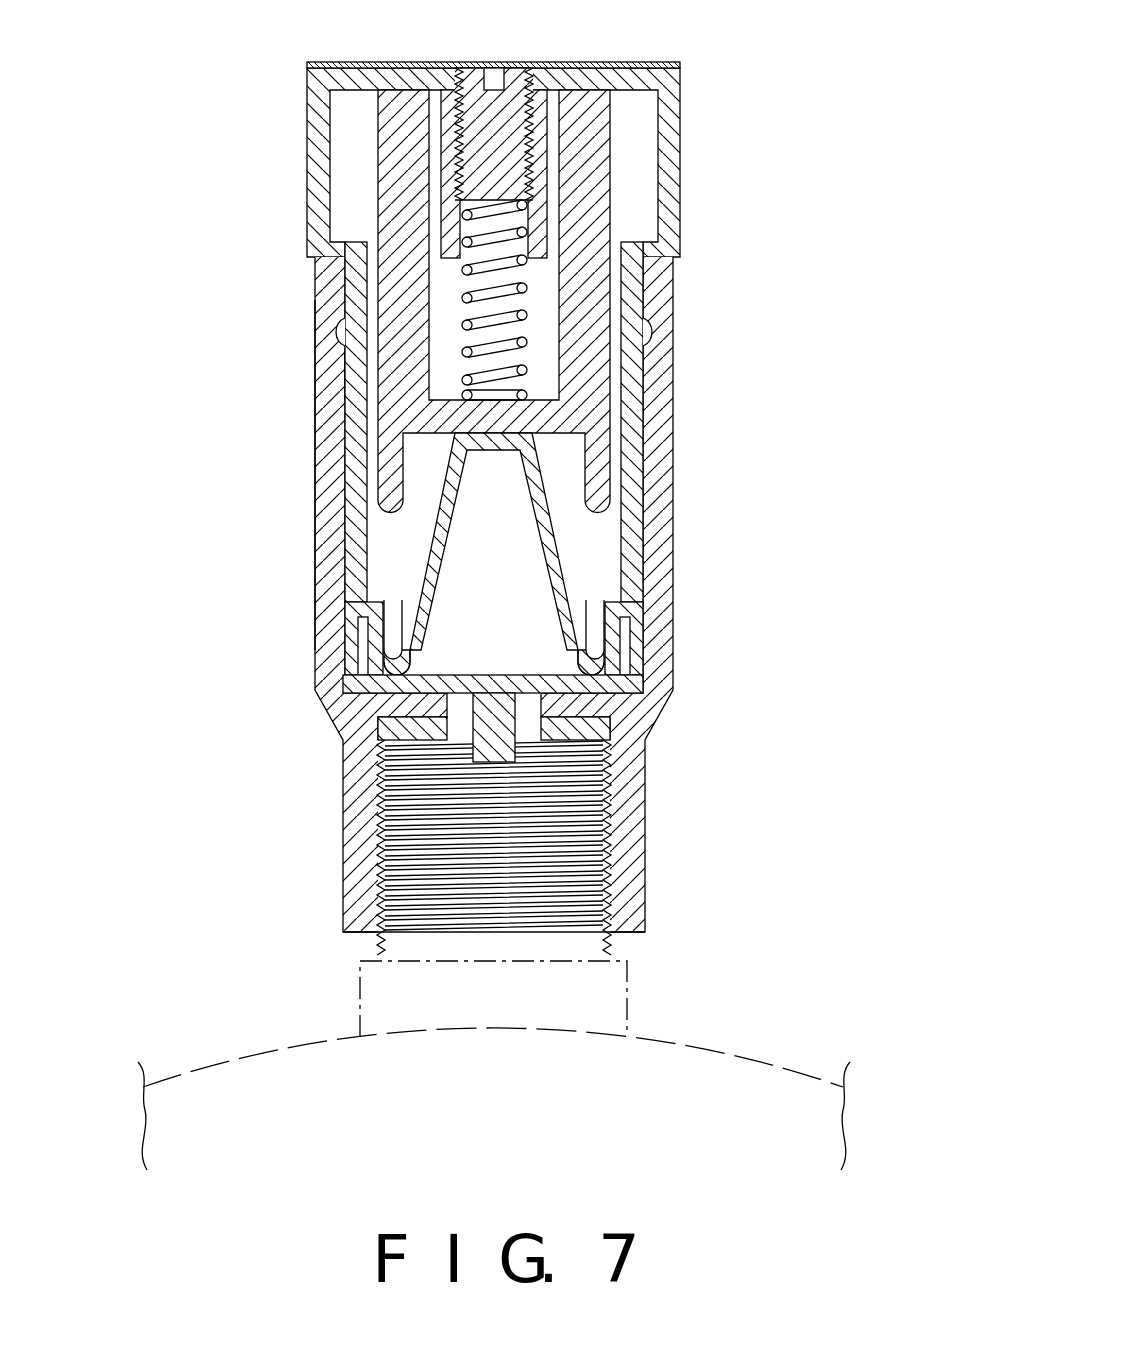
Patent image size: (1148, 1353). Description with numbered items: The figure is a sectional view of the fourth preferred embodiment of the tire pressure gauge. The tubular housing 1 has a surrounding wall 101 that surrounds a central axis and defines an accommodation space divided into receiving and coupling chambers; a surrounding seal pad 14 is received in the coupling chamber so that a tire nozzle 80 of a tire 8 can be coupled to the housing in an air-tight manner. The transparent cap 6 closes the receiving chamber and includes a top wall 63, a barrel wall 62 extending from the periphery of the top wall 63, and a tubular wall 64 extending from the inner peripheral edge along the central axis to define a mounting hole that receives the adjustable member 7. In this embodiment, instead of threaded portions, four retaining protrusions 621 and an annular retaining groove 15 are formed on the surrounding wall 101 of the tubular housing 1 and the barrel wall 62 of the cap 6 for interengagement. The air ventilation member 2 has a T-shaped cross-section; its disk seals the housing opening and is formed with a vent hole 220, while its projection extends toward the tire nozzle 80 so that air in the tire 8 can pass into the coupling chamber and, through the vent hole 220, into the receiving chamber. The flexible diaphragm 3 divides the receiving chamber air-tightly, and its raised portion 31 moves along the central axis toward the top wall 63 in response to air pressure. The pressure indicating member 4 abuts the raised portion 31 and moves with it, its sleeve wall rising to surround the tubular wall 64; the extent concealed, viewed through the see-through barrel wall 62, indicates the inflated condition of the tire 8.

The tubular housing 1 is at (315, 502).
The surrounding wall 101 is at (318, 463).
The annular retaining groove 15 is at (337, 357).
The air ventilation member 2 is at (583, 683).
The vent hole 220 is at (527, 682).
The flexible diaphragm 3 is at (565, 542).
The raised portion 31 is at (570, 583).
The pressure indicating member 4 is at (607, 367).
The cap 6 is at (680, 162).
The barrel wall 62 is at (345, 322).
The retaining protrusions 621 is at (340, 348).
The top wall 63 is at (383, 78).
The tubular wall 64 is at (543, 120).
The adjustable member 7 is at (518, 88).
The surrounding seal pad 14 is at (590, 735).
The tire 8 is at (720, 1087).
The tire nozzle 80 is at (613, 983).